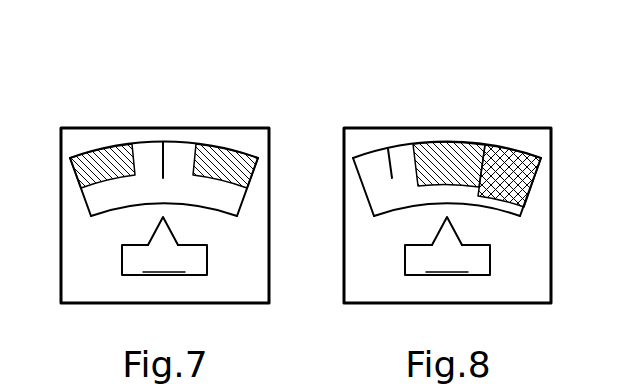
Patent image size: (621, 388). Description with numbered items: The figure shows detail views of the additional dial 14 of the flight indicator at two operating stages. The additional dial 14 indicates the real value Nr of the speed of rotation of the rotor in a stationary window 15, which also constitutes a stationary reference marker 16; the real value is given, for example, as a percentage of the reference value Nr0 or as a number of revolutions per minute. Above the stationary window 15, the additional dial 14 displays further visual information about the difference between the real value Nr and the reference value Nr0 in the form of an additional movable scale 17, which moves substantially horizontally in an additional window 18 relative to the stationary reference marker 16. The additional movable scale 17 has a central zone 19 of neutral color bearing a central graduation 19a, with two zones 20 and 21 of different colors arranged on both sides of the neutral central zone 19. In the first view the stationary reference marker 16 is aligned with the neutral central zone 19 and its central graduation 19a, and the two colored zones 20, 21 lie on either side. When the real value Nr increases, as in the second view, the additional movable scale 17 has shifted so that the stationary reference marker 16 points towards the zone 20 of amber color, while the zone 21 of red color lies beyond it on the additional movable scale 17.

In FIG. 7, the additional dial 14 is at (272, 119).
In FIG. 8, the additional dial 14 is at (516, 119).
In FIG. 7, the stationary window 15 is at (207, 258).
In FIG. 8, the stationary window 15 is at (490, 258).
In FIG. 7, the stationary reference marker 16 is at (155, 226).
In FIG. 8, the stationary reference marker 16 is at (447, 231).
In FIG. 7, the additional movable scale 17 is at (246, 200).
In FIG. 8, the additional movable scale 17 is at (528, 200).
In FIG. 7, the additional window 18 is at (85, 204).
In FIG. 8, the central zone 19 is at (373, 157).
In FIG. 7, the central graduation 19a is at (163, 149).
In FIG. 8, the central graduation 19a is at (390, 155).
In FIG. 7, the zone of amber color 20 is at (100, 165).
In FIG. 8, the zone of amber color 20 is at (434, 153).
In FIG. 8, the zone of red color 21 is at (525, 181).